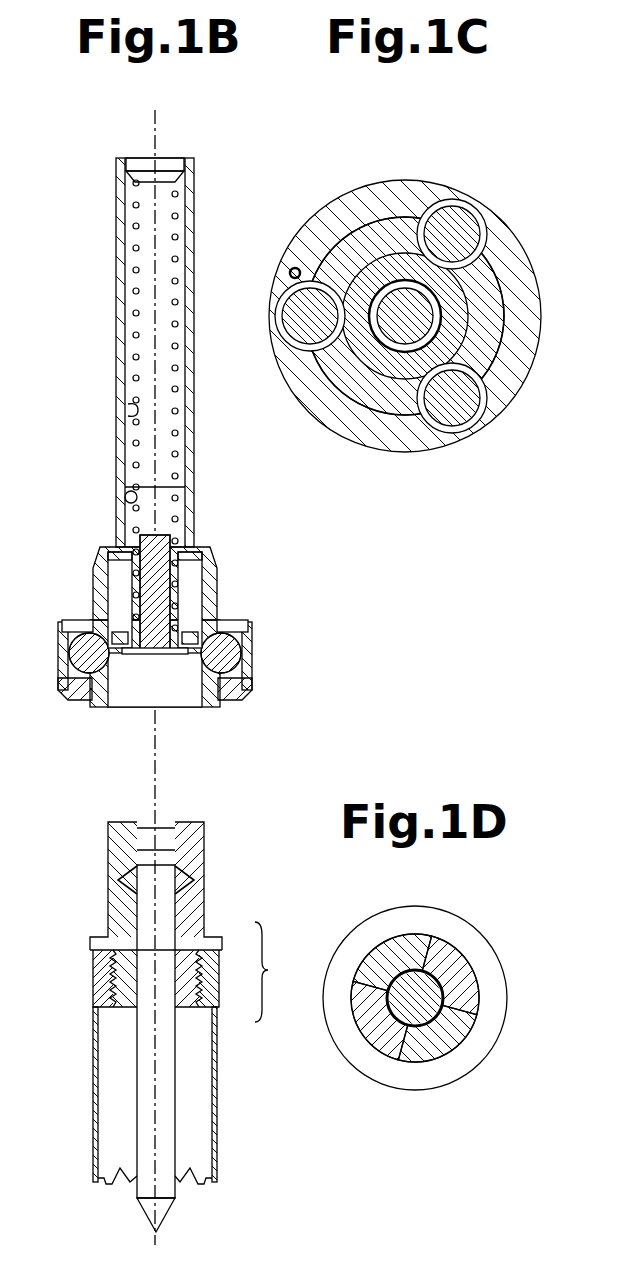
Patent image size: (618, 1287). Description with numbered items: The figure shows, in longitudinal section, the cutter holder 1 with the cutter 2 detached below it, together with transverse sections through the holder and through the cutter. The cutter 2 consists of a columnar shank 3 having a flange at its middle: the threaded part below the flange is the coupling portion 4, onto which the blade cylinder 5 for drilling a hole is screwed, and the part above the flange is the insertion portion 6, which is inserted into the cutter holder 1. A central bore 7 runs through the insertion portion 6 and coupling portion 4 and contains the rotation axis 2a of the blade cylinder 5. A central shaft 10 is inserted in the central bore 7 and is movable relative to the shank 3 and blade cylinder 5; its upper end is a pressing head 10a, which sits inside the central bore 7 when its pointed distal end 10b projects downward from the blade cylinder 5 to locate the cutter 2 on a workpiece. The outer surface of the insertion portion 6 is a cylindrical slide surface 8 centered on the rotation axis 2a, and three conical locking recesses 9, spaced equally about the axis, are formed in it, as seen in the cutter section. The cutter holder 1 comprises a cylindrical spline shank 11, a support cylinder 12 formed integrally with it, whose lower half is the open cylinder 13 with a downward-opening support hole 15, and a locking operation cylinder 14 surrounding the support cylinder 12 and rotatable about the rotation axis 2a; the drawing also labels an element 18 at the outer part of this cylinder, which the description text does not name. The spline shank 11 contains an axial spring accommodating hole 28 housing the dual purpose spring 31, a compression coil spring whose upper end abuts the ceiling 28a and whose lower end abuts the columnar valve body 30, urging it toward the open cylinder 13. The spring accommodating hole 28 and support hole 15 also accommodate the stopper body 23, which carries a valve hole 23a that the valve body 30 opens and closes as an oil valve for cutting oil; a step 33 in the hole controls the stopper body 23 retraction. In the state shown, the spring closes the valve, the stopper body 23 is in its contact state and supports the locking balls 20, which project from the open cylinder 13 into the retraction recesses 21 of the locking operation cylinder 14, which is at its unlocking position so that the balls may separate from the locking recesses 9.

In FIG. 1B, the cutter holder 1 is at (100, 543).
In FIG. 1B, the cutter 2 is at (221, 1137).
In FIG. 1B, the rotation axis 2a is at (158, 770).
In FIG. 1B, the shank 3 is at (266, 972).
In FIG. 1B, the coupling portion 4 is at (195, 1007).
In FIG. 1B, the blade cylinder 5 is at (218, 1080).
In FIG. 1B, the insertion portion 6 is at (192, 915).
In FIG. 1D, the insertion portion 6 is at (385, 948).
In FIG. 1B, the central bore 7 is at (146, 1005).
In FIG. 1D, the central bore 7 is at (445, 1013).
In FIG. 1B, the slide surface 8 is at (205, 835).
In FIG. 1D, the slide surface 8 is at (500, 978).
In FIG. 1B, the locking recesses 9 is at (115, 880).
In FIG. 1D, the locking recesses 9 is at (450, 942).
In FIG. 1B, the central shaft 10 is at (137, 1187).
In FIG. 1D, the central shaft 10 is at (412, 1012).
In FIG. 1B, the pressing head 10a is at (150, 828).
In FIG. 1B, the distal end 10b is at (165, 1212).
In FIG. 1B, the spline shank 11 is at (195, 182).
In FIG. 1B, the support cylinder 12 is at (93, 578).
In FIG. 1B, the open cylinder 13 is at (95, 712).
In FIG. 1C, the open cylinder 13 is at (482, 348).
In FIG. 1B, the locking operation cylinder 14 is at (62, 620).
In FIG. 1C, the locking operation cylinder 14 is at (498, 226).
In FIG. 1B, the support hole 15 is at (125, 692).
In FIG. 1B, the retainer 18 is at (57, 690).
In FIG. 1C, the retainer 18 is at (404, 185).
In FIG. 1B, the locking balls 20 is at (82, 655).
In FIG. 1C, the locking balls 20 is at (497, 460).
In FIG. 1C, the retraction recesses 21 is at (295, 266).
In FIG. 1B, the stopper body 23 is at (192, 606).
In FIG. 1C, the stopper body 23 is at (368, 352).
In FIG. 1B, the valve hole 23a is at (172, 656).
In FIG. 1C, the valve hole 23a is at (362, 232).
In FIG. 1B, the spring accommodating hole 28 is at (130, 370).
In FIG. 1B, the ceiling 28a is at (137, 176).
In FIG. 1B, the valve body 30 is at (158, 548).
In FIG. 1C, the valve body 30 is at (395, 330).
In FIG. 1B, the dual purpose spring 31 is at (133, 410).
In FIG. 1B, the step 33 is at (126, 497).